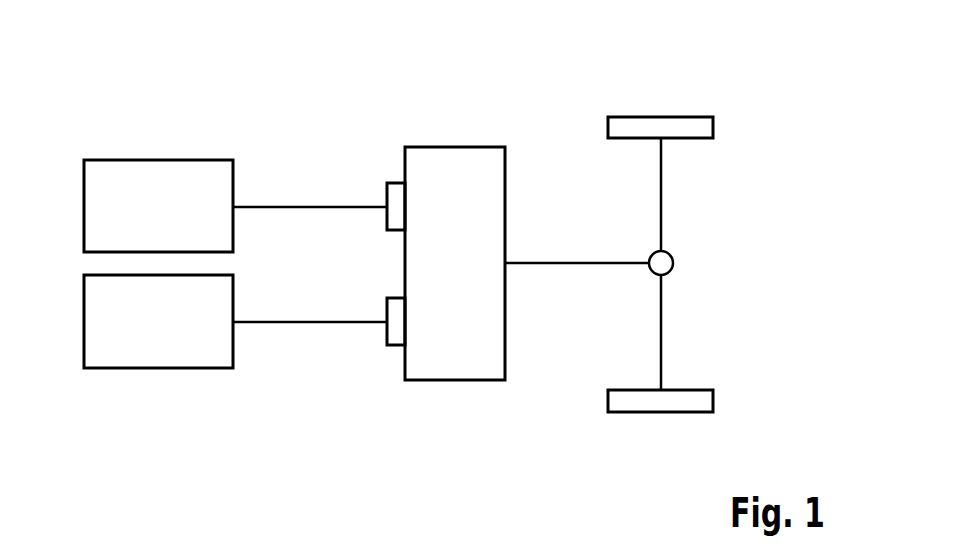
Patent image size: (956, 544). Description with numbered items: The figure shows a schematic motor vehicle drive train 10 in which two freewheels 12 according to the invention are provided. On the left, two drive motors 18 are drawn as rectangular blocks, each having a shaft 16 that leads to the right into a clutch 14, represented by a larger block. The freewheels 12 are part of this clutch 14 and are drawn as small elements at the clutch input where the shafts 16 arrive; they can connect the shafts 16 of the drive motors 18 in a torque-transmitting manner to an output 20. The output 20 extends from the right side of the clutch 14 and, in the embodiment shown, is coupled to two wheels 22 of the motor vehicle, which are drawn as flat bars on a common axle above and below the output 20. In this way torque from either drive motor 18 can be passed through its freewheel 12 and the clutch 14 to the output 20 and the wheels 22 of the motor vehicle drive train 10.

The motor vehicle drive train 10 is at (238, 95).
The freewheel 12 is at (398, 183).
The clutch 14 is at (448, 147).
The shaft 16 is at (312, 207).
The drive motor 18 is at (137, 160).
The output 20 is at (678, 253).
The wheel 22 is at (668, 117).